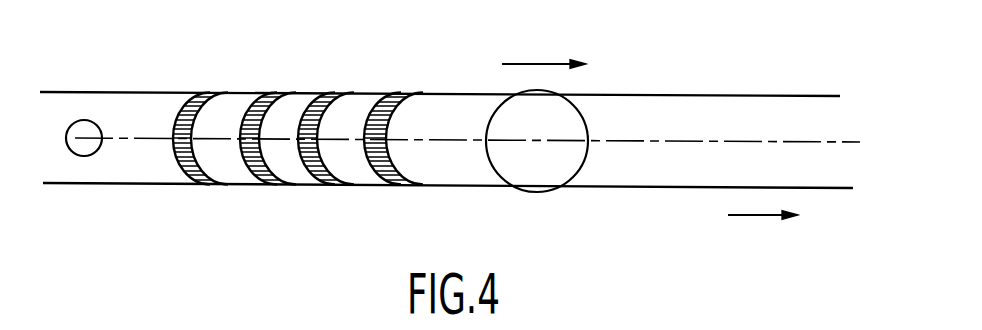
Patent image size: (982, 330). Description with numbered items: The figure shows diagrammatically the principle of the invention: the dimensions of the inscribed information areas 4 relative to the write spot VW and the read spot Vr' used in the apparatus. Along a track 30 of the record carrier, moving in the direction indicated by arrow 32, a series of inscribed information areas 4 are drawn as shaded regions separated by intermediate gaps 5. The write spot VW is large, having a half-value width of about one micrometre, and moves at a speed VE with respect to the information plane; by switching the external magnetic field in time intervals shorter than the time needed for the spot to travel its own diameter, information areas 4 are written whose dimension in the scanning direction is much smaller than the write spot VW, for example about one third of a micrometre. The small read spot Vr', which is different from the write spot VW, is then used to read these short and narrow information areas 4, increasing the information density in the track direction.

The information areas 4 is at (255, 185).
The untreated gaps between zones 5 is at (300, 173).
The workpiece / rod 30 is at (660, 112).
The feed direction arrow 32 is at (778, 218).
The speed of the write spot VE is at (556, 63).
The write spot VW is at (542, 173).
The read spot Vr' is at (88, 175).